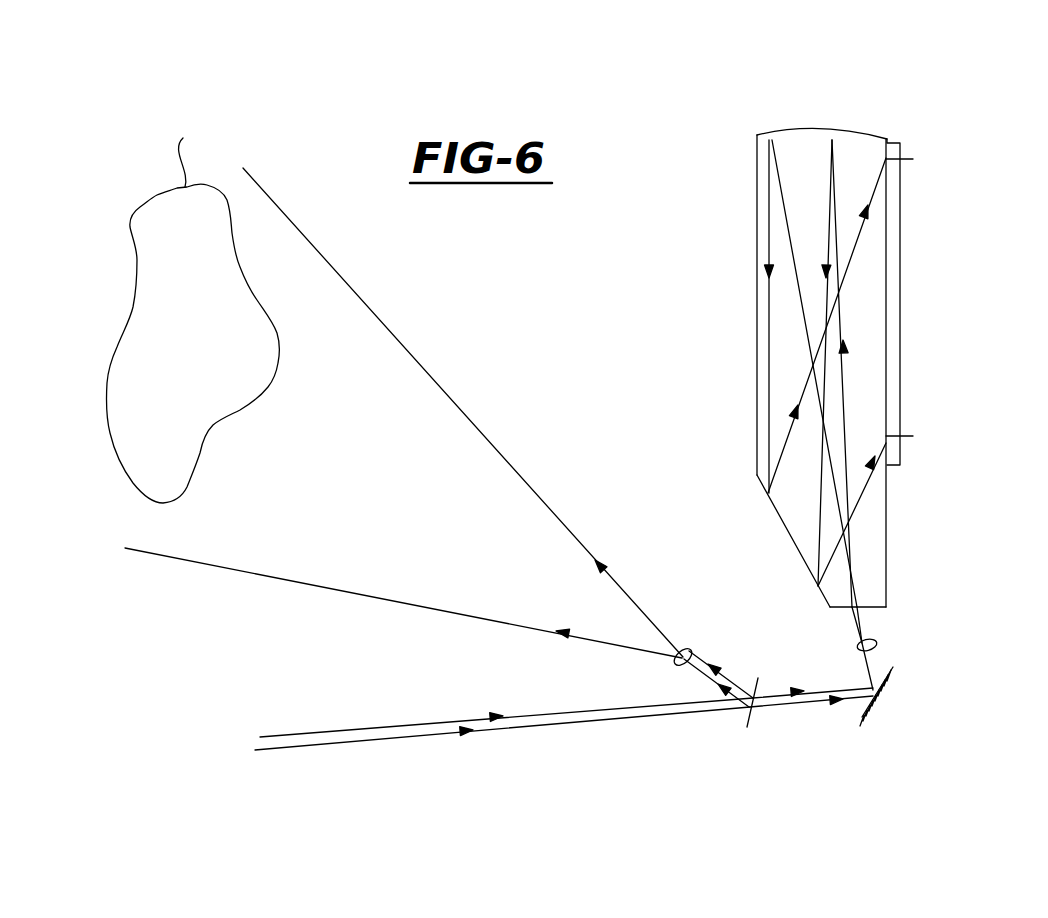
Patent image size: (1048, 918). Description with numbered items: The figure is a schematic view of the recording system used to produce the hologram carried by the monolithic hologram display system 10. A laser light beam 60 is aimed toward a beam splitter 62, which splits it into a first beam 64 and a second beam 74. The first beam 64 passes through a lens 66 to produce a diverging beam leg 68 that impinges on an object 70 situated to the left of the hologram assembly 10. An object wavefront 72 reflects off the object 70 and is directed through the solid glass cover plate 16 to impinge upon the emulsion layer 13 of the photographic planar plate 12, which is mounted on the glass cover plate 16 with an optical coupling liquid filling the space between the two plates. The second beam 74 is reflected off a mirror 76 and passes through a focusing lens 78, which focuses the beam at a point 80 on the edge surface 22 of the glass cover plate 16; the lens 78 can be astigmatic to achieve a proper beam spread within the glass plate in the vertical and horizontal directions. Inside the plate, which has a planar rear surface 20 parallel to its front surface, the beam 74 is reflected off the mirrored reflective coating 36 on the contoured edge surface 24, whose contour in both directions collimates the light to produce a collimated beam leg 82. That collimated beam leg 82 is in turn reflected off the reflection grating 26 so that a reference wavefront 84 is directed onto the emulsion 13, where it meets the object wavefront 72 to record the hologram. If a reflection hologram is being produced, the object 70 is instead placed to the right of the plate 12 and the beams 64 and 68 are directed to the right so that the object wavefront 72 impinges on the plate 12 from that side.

The monolithic hologram display system 10 is at (795, 118).
The photographic planar plate 12 is at (905, 140).
The emulsion layer 13 is at (888, 243).
The solid glass cover plate 16 is at (768, 230).
The rear surface 20 is at (757, 298).
The edge surface 22 is at (847, 610).
The contoured edge surface 24 is at (832, 138).
The reflection grating 26 is at (777, 517).
The reflective coating 36 is at (773, 136).
The laser light beam 60 is at (580, 718).
The beam splitter 62 is at (752, 720).
The beam 64 is at (730, 677).
The lens 66 is at (688, 647).
The diverging beam leg 68 is at (548, 550).
The object 70 is at (253, 317).
The object wavefront 72 is at (542, 277).
The second beam 74 is at (855, 695).
The mirror 76 is at (893, 667).
The focusing lens 78 is at (880, 638).
The point 80 is at (870, 613).
The collimated beam leg 82 is at (827, 220).
The reference wavefront 84 is at (847, 377).